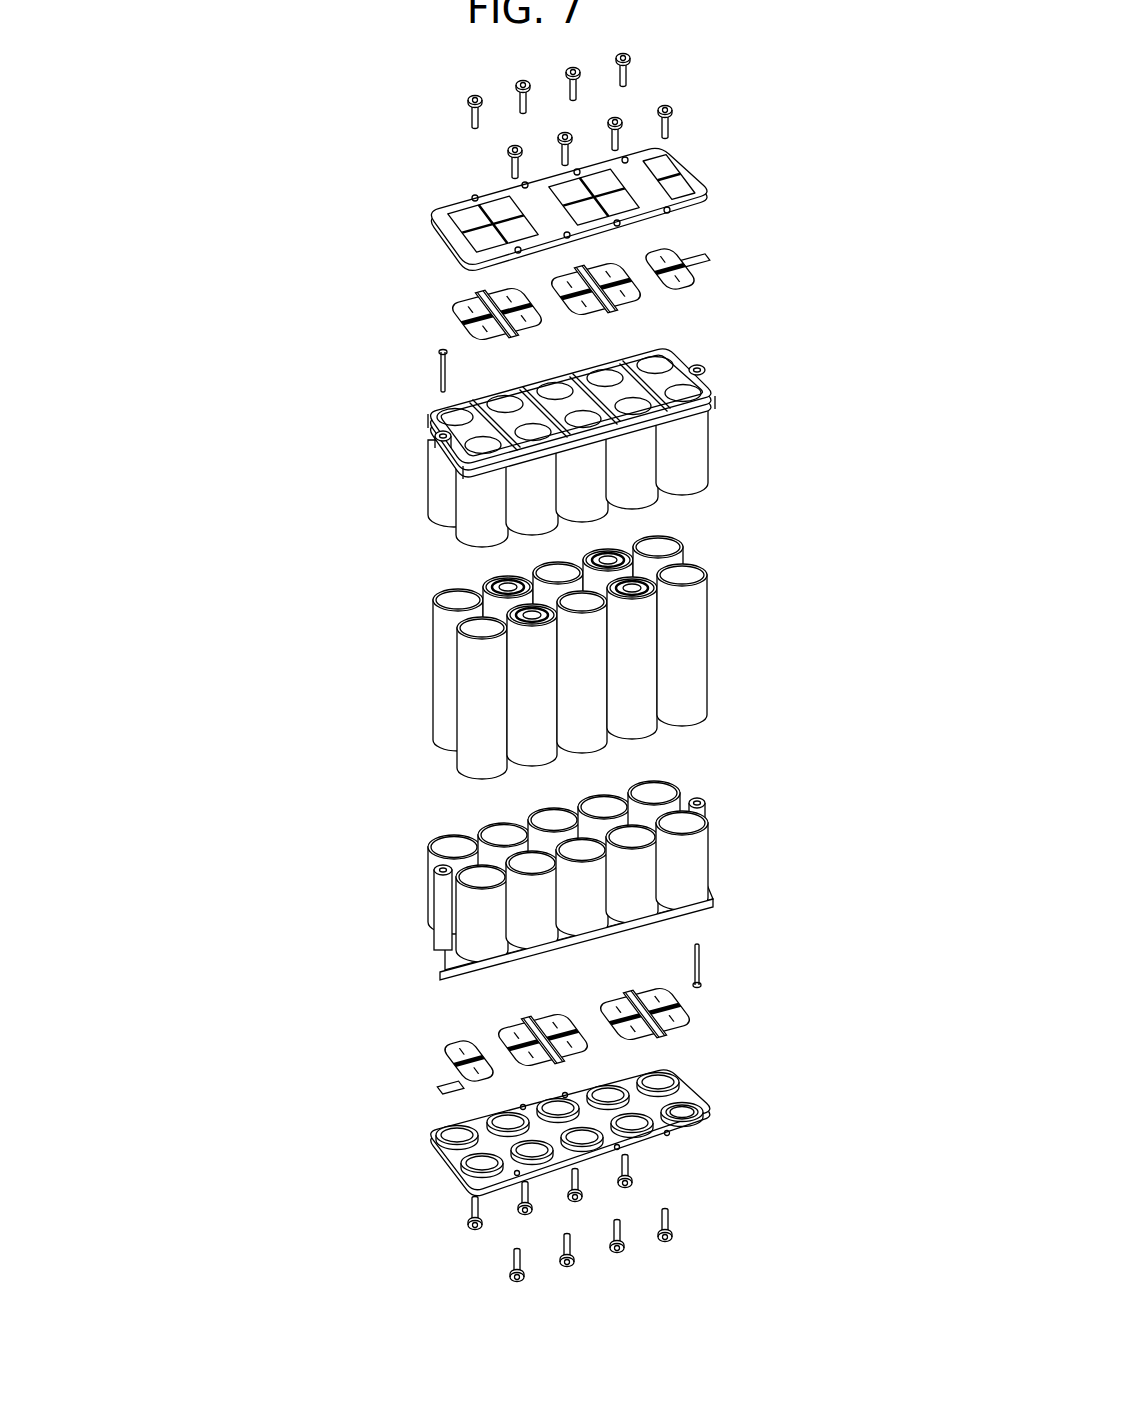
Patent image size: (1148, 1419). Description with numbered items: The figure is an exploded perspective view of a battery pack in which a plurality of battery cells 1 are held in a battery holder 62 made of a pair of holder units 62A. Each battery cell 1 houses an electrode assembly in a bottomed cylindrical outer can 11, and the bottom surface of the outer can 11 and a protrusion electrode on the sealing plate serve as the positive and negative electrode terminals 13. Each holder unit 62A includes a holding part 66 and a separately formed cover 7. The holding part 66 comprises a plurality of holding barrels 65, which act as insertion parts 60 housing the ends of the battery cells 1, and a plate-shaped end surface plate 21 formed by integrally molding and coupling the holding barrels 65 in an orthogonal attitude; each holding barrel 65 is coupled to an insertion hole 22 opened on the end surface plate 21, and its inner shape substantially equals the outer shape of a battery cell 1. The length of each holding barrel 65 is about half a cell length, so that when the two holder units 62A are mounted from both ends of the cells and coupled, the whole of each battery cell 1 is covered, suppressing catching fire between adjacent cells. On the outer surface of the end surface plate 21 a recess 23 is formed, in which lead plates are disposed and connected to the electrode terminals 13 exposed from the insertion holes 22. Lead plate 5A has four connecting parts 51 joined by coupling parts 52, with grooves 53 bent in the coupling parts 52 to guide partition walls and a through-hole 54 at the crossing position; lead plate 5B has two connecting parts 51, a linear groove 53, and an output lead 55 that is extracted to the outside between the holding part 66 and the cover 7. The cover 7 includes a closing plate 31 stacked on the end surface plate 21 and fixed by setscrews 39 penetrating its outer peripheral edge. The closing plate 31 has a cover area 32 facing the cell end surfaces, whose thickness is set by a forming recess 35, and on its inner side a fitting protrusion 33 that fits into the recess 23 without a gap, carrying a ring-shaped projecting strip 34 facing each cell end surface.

The battery cell 1 is at (722, 620).
The lead plate 5A is at (482, 1005).
The lead plate 5B is at (430, 1050).
The cover 7 is at (426, 211).
The outer can 11 is at (478, 698).
The electrode terminal 13 is at (617, 560).
The end surface plate 21 is at (703, 413).
The insertion hole 22 is at (455, 417).
The recess 23 is at (530, 450).
The closing plate 31 is at (497, 192).
The cover area 32 is at (470, 213).
The fitting protrusion 33 is at (668, 1128).
The ring-shaped projecting strip 34 is at (688, 1113).
The forming recess 35 is at (455, 222).
The setscrew 39 is at (670, 116).
The connecting part 51 is at (470, 292).
The coupling part 52 is at (483, 313).
The groove 53 is at (565, 1075).
The through-hole 54 is at (548, 1042).
The output lead 55 is at (700, 267).
The insertion part 60 is at (785, 402).
The battery holder 62 is at (200, 280).
The holder unit 62A is at (286, 187).
The holding barrel 65 is at (700, 450).
The holding part 66 is at (385, 440).